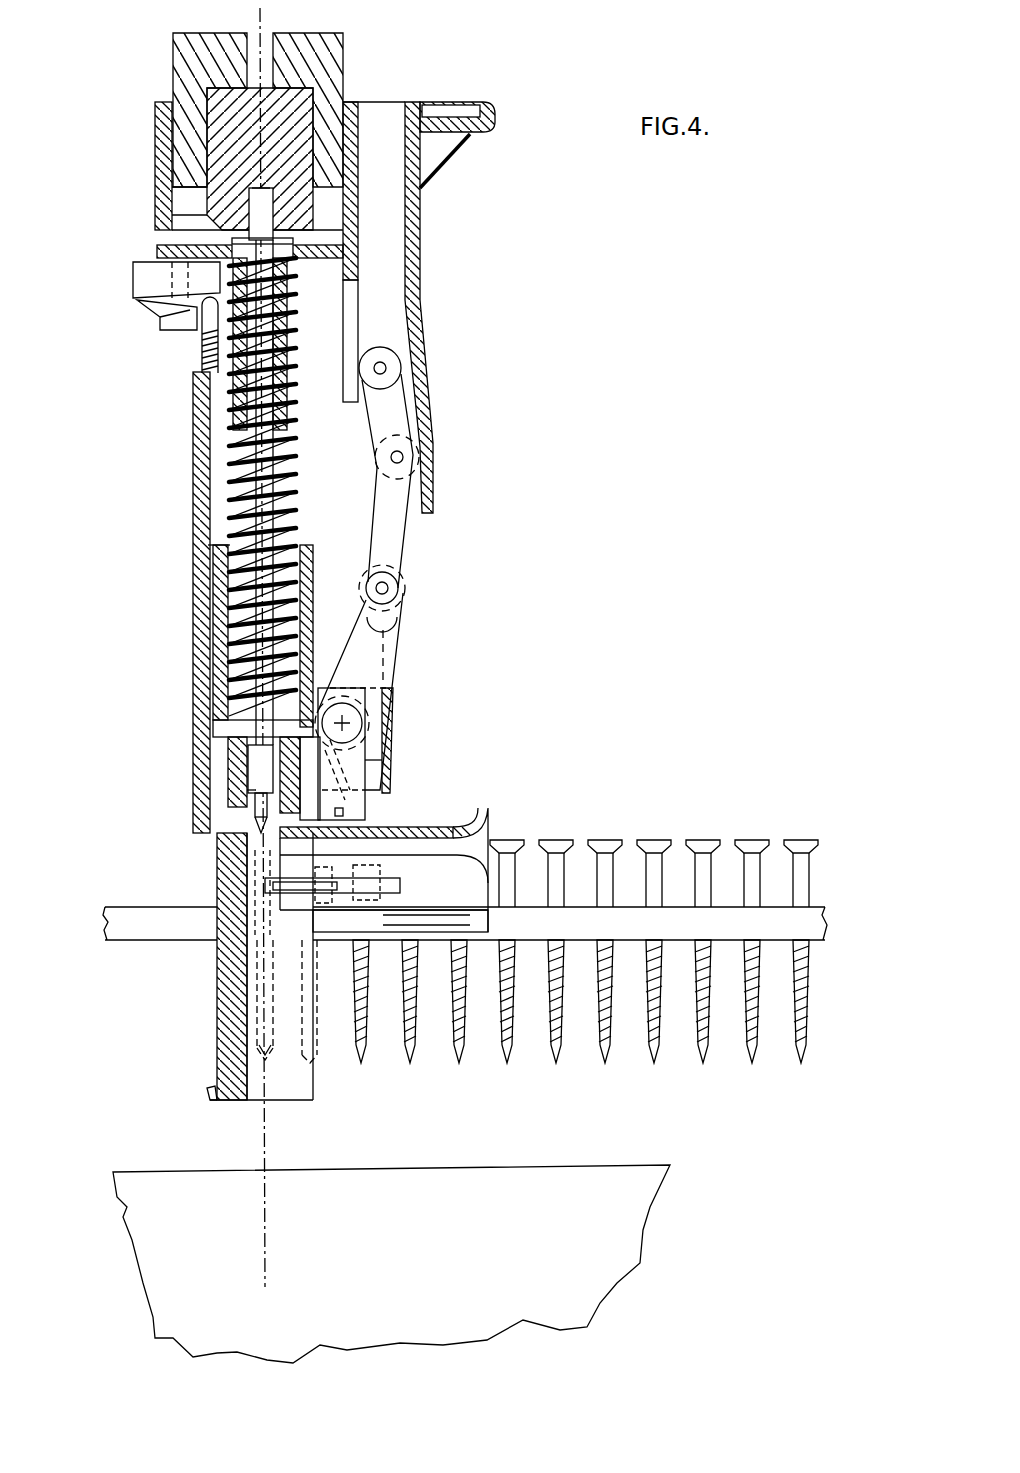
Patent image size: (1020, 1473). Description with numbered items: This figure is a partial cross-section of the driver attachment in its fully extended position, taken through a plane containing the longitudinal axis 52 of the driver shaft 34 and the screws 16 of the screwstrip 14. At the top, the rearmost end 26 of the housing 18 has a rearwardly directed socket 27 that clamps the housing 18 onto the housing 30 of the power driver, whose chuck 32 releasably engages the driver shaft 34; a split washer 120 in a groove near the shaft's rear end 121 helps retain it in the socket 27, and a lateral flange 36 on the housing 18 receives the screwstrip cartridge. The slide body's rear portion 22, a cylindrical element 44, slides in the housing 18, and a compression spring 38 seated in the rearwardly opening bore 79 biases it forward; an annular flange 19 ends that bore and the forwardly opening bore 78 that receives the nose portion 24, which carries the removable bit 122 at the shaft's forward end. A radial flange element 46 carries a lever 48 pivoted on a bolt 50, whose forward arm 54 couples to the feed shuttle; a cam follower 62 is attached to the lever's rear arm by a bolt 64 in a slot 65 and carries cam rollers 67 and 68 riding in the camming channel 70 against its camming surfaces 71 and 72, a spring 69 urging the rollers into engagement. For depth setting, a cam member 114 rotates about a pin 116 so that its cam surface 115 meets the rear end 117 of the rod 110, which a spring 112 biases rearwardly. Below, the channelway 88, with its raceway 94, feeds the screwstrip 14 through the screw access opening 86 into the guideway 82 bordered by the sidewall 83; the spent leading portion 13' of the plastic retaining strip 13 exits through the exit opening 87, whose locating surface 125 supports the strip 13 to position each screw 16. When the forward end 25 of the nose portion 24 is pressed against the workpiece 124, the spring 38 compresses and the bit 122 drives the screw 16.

The longitudinal axis 52 is at (262, 16).
The housing of the power driver 30 is at (190, 72).
The chuck 32 is at (300, 96).
The rearmost end 26 is at (172, 108).
The socket 27 is at (183, 207).
The driver shaft 34 is at (250, 204).
The rear end of the driver shaft 121 is at (259, 186).
The split washer 120 is at (295, 240).
The camming channel 70 is at (392, 219).
The camming surface 71 is at (359, 312).
The camming surface 72 is at (408, 254).
The lateral flange 36 is at (496, 108).
The depth setting cam member 114 is at (134, 290).
The cam surface 115 is at (140, 310).
The pin 116 is at (172, 326).
The rod 110 is at (203, 322).
The spring 112 is at (200, 378).
The housing 18 is at (186, 461).
The rear portion 22 is at (202, 593).
The rear end of the rod 117 is at (288, 303).
The compression spring 38 is at (296, 456).
The cylindrical element 44 is at (312, 560).
The rearwardly opening bore 79 is at (220, 545).
The annular flange 19 is at (228, 734).
The forwardly opening bore 78 is at (240, 815).
The bit 122 is at (250, 795).
The cam roller 67 is at (398, 352).
The cam follower 62 is at (408, 500).
The cam roller 68 is at (374, 462).
The bolt 64 is at (390, 590).
The slot 65 is at (397, 622).
The lever 48 is at (388, 644).
The bolt 50 is at (346, 722).
The flange element 46 is at (393, 712).
The forward arm 54 is at (360, 808).
The spring 69 is at (370, 770).
The channelway 88 is at (492, 824).
The raceway 94 is at (474, 818).
The screw access opening 86 is at (287, 866).
The nose portion 24 is at (228, 866).
The forward end of the nose portion 25 is at (222, 1100).
The leading portion of the strip 13' is at (143, 906).
The plastic retaining strip 13 is at (570, 1014).
The exit opening 87 is at (222, 948).
The locating surface 125 is at (255, 1005).
The guideway 82 is at (255, 1037).
The sidewall 83 is at (252, 1052).
The screw 16 is at (647, 824).
The screwstrip 14 is at (748, 1098).
The workpiece 124 is at (482, 1236).